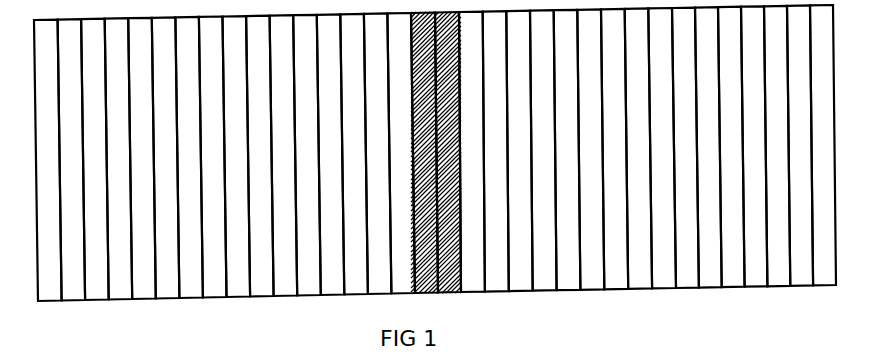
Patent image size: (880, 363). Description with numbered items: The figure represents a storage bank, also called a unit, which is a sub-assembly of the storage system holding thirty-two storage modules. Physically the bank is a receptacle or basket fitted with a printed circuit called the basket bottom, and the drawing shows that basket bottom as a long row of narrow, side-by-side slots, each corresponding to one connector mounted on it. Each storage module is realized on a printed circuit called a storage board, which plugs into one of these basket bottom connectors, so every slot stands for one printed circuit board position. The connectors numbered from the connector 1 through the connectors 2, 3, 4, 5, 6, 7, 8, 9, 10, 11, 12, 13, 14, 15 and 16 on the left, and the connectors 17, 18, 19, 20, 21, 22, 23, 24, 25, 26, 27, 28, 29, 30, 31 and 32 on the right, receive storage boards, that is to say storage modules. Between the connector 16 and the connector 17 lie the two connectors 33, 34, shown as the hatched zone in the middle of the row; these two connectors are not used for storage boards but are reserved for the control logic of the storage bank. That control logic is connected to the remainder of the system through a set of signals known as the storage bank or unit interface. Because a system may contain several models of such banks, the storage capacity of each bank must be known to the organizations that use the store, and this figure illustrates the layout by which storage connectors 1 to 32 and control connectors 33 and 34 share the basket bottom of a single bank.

The connector 1 is at (48, 160).
The connector 2 is at (72, 159).
The connector 3 is at (95, 159).
The connector 4 is at (119, 158).
The connector 5 is at (142, 158).
The connector 6 is at (166, 157).
The connector 7 is at (189, 157).
The connector 8 is at (213, 157).
The connector 9 is at (237, 156).
The connector 10 is at (260, 156).
The connector 11 is at (284, 155).
The connector 12 is at (307, 155).
The connector 13 is at (331, 154).
The connector 14 is at (354, 154).
The connector 15 is at (378, 153).
The connector 16 is at (401, 153).
The connector 17 is at (472, 152).
The connector 18 is at (496, 151).
The connector 19 is at (519, 151).
The connector 20 is at (543, 150).
The connector 21 is at (567, 150).
The connector 22 is at (590, 149).
The connector 23 is at (614, 149).
The connector 24 is at (638, 148).
The connector 25 is at (662, 148).
The connector 26 is at (685, 148).
The connector 27 is at (708, 147).
The connector 28 is at (731, 147).
The connector 29 is at (754, 146).
The connector 30 is at (777, 146).
The connector 31 is at (800, 145).
The connector 32 is at (823, 145).
The connector 33 is at (436, 152).
The connector 34 is at (448, 152).